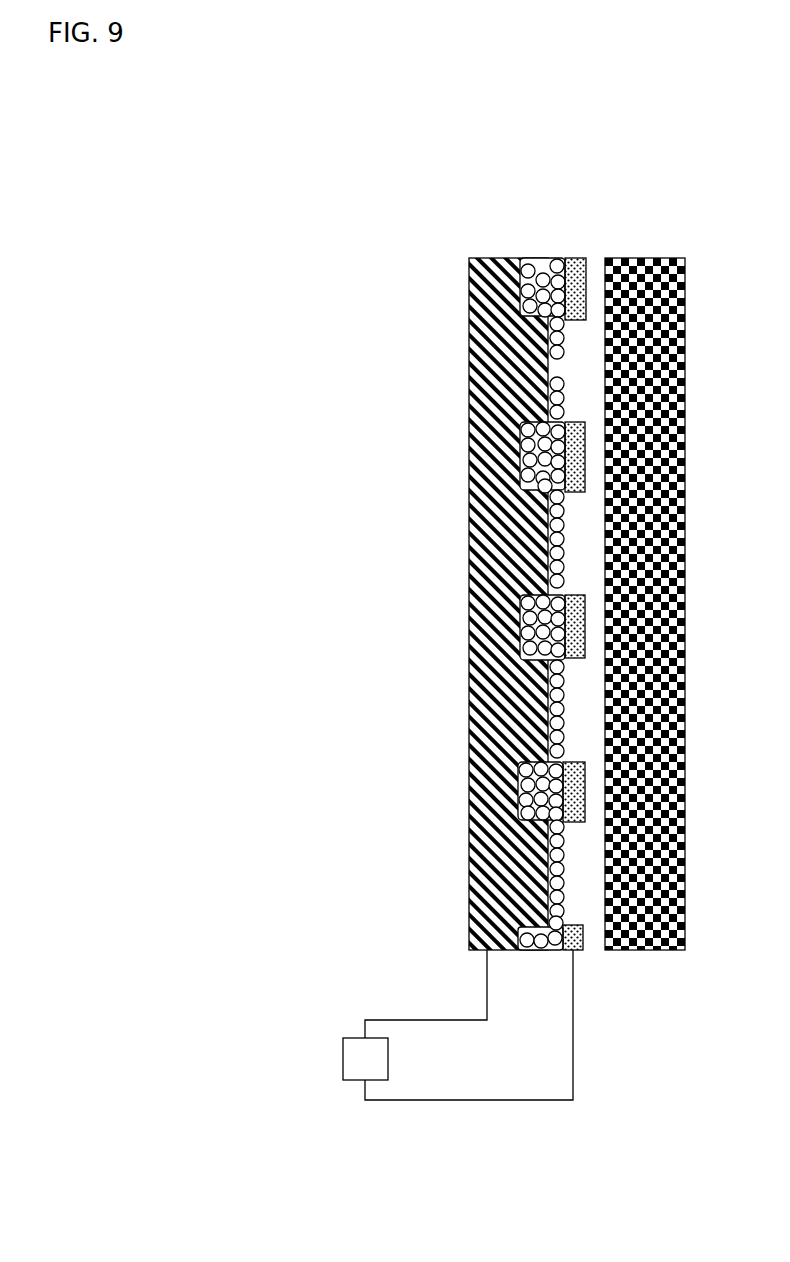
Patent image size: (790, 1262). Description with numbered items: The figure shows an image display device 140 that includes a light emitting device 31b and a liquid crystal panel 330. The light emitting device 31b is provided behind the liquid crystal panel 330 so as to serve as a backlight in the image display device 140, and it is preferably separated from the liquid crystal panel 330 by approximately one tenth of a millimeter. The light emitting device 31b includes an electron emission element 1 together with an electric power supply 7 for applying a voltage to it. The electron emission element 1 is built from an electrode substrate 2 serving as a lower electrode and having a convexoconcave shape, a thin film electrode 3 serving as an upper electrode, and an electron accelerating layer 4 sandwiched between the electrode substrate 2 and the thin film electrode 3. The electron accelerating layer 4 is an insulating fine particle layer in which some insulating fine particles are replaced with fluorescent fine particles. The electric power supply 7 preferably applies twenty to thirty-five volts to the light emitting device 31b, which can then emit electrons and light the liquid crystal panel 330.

The image display device 140 is at (612, 170).
The light emitting device 31b is at (412, 210).
The electron emission element 1 is at (475, 193).
The electrode substrate 2 is at (485, 256).
The thin film electrode 3 is at (575, 256).
The electron accelerating layer 4 is at (543, 256).
The liquid crystal panel 330 is at (648, 256).
The electric power supply 7 is at (343, 1058).